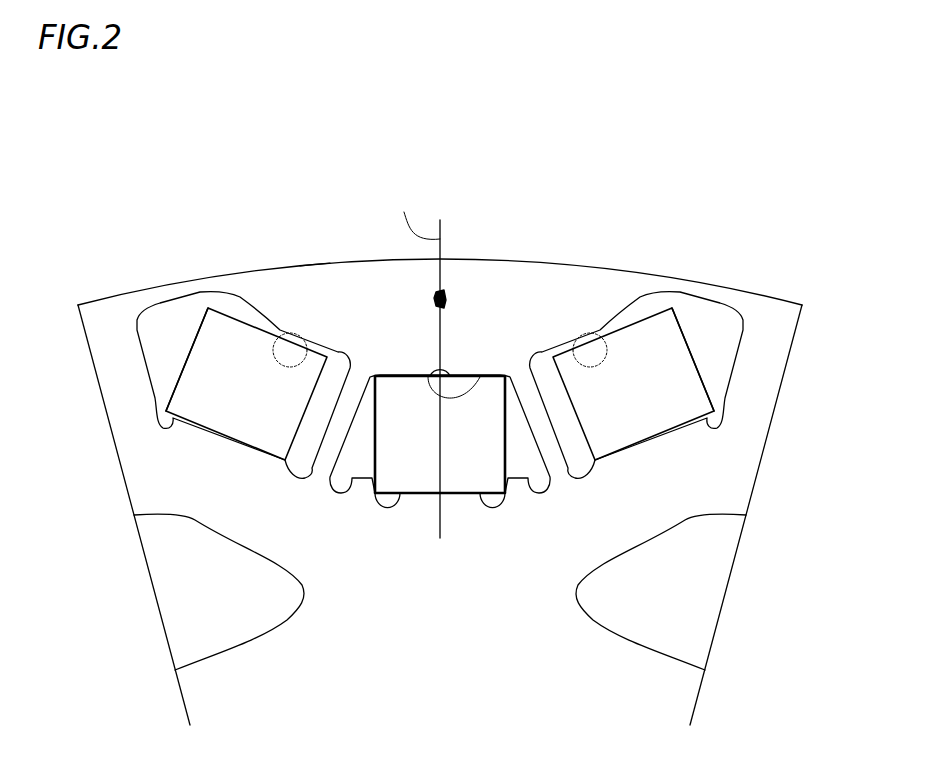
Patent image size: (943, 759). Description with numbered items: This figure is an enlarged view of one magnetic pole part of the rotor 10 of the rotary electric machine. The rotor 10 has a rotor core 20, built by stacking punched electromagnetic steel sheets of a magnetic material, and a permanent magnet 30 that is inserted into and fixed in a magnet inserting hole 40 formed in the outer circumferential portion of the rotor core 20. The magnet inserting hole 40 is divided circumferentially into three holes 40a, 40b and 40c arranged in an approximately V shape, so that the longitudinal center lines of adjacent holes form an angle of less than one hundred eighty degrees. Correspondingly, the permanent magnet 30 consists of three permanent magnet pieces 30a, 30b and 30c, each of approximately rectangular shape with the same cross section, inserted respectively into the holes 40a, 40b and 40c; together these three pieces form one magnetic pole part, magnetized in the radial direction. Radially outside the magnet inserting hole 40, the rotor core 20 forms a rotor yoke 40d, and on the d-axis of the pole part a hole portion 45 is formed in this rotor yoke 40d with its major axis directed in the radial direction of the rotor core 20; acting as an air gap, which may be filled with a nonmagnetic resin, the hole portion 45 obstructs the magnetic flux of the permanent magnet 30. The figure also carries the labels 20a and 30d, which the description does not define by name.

The rotor 10 is at (700, 147).
The rotor core 20 is at (788, 298).
The outer peripheral surface of rotor core 20a is at (745, 290).
The permanent magnet 30 is at (558, 706).
The permanent magnet piece 30a is at (268, 436).
The permanent magnet piece 30b is at (463, 477).
The permanent magnet piece 30c is at (613, 438).
The side surface of permanent magnet 30d is at (177, 373).
The magnet inserting hole 40 is at (352, 118).
The hole 40a is at (313, 345).
The hole 40b is at (480, 374).
The hole 40c is at (603, 330).
The rotor yoke 40d is at (313, 280).
The hole portion 45 is at (447, 298).